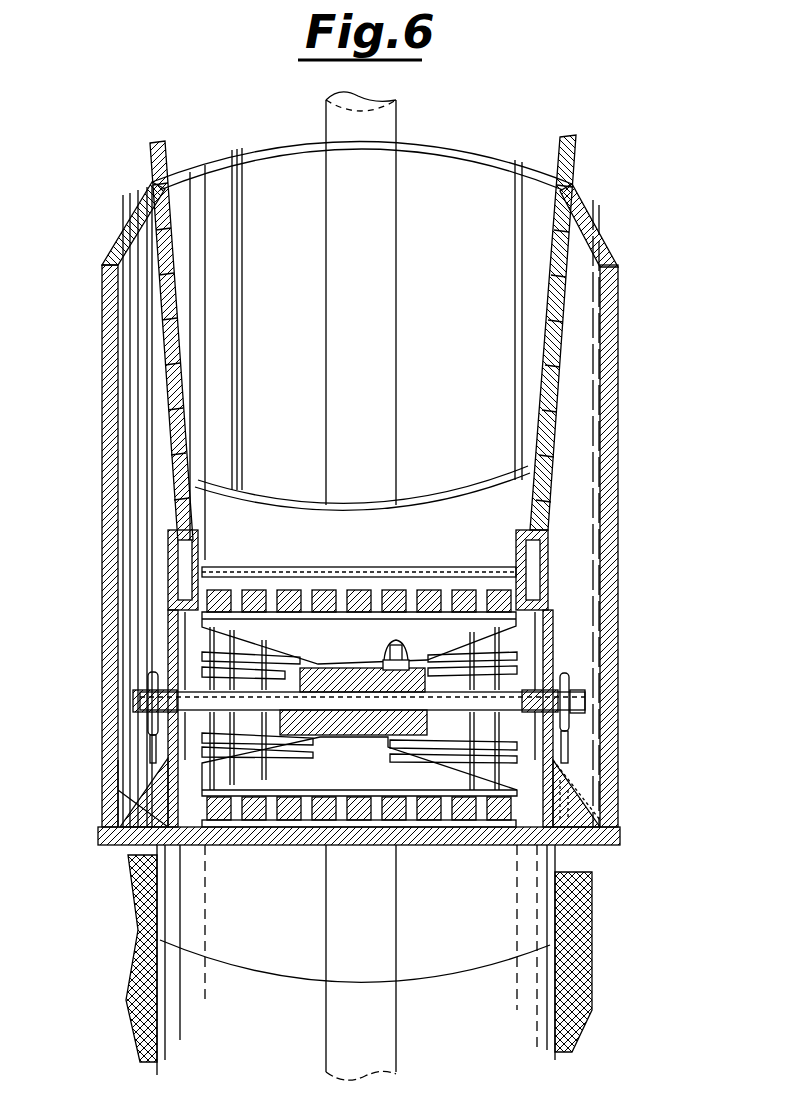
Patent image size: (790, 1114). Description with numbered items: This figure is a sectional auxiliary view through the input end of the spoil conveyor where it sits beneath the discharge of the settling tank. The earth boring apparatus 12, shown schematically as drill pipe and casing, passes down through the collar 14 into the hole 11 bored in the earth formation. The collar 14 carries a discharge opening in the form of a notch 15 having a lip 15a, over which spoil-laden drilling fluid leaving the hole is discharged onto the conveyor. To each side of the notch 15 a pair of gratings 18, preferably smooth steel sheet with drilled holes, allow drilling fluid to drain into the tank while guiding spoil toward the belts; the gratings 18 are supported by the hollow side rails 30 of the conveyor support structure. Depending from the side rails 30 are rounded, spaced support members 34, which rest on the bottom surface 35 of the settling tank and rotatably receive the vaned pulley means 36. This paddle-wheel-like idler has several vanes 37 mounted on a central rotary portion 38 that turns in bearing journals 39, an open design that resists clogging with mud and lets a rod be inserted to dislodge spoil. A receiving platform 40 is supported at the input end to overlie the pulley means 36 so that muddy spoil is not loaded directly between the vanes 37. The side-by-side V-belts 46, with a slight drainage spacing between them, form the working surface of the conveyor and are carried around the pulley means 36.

The hole 11 is at (158, 1006).
The earth boring apparatus 12 is at (327, 112).
The collar 14 is at (606, 240).
The notch 15 is at (444, 350).
The lip 15a is at (412, 500).
The gratings 18 is at (150, 162).
The side rails 30 is at (170, 572).
The spaced support members 34 is at (165, 805).
The bottom surface 35 is at (290, 822).
The vaned pulley means 36 is at (368, 760).
The vanes 37 is at (378, 625).
The central rotary portion 38 is at (355, 668).
The bearing journals 39 is at (150, 685).
The receiving platform 40 is at (278, 575).
The V-belts 46 is at (360, 592).